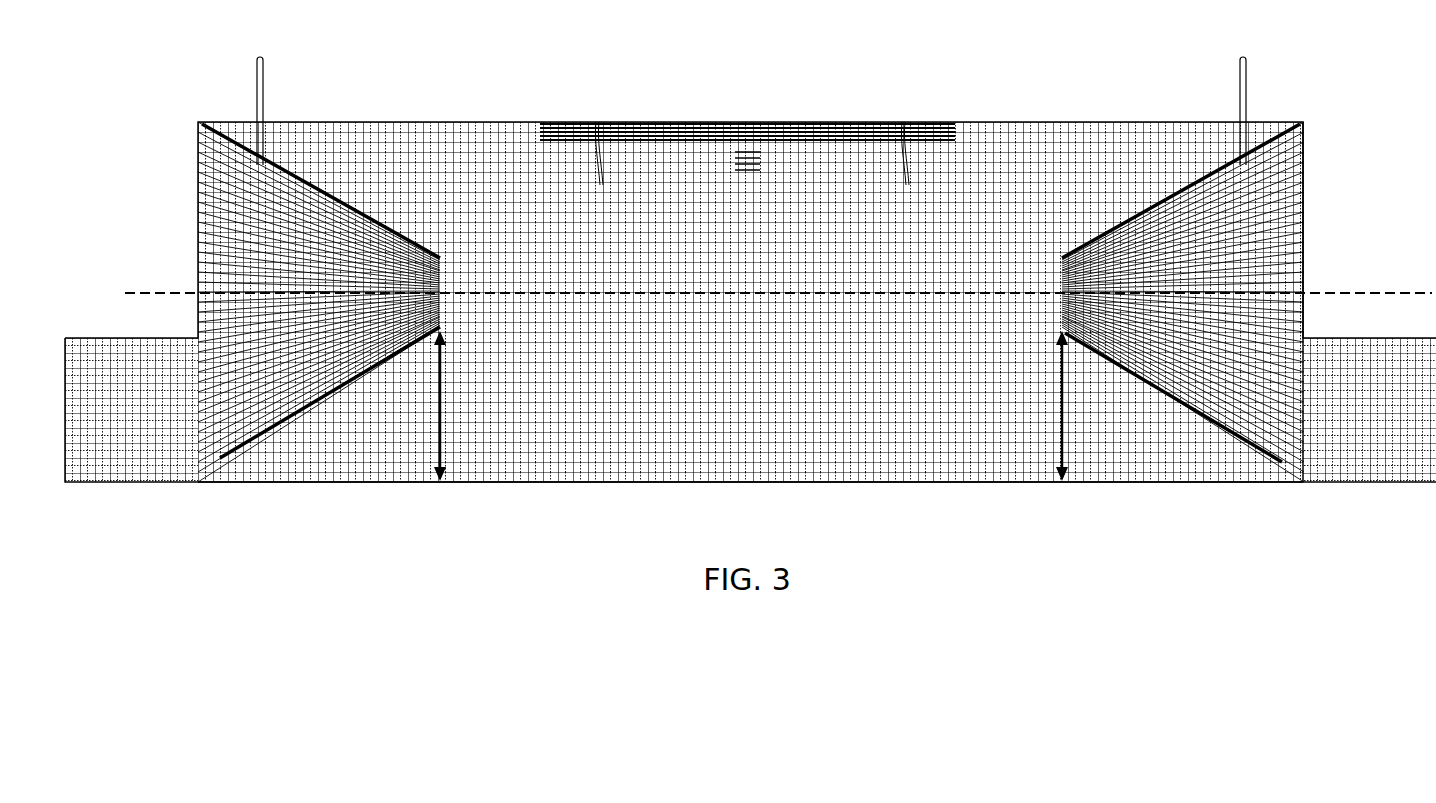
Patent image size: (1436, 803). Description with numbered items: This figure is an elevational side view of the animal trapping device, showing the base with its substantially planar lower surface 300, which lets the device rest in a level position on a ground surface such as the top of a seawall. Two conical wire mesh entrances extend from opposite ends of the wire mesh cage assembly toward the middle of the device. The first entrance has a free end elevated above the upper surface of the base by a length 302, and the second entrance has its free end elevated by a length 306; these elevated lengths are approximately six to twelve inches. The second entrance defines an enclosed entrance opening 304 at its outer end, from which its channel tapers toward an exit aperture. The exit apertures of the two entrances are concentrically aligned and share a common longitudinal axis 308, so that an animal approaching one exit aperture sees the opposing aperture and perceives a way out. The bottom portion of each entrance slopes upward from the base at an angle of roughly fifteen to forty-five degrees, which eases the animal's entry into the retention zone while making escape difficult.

The lower surface 300 is at (540, 481).
The length 302 is at (440, 466).
The enclosed entrance opening 304 is at (1305, 219).
The length 306 is at (1060, 470).
The longitudinal axis 308 is at (144, 293).